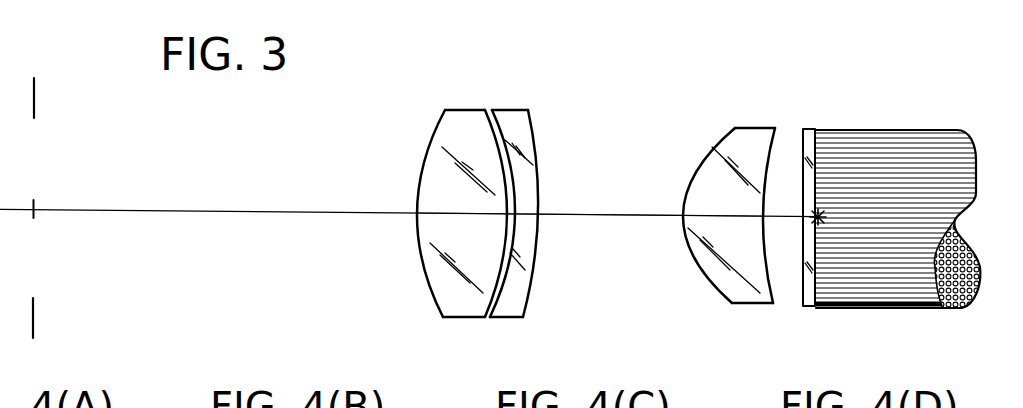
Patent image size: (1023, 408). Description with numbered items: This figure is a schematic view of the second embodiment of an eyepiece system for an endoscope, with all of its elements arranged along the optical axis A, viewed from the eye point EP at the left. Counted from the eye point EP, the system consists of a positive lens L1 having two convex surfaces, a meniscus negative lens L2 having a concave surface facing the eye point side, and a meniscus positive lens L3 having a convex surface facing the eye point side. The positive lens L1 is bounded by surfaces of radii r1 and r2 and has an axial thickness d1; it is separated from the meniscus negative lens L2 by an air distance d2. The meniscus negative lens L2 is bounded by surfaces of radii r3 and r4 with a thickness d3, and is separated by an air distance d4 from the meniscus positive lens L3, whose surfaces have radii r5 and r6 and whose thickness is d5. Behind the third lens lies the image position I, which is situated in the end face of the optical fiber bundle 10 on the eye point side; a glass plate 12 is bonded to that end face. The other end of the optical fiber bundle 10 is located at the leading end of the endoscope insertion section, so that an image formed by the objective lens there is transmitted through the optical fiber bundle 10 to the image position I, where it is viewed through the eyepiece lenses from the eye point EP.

The optical axis A is at (227, 211).
The eye point EP is at (37, 208).
The positive lens L1 is at (439, 191).
The meniscus negative lens L2 is at (548, 193).
The meniscus positive lens L3 is at (748, 203).
The radius of curvature of the first surface r1 is at (430, 287).
The radius of curvature of the second surface r2 is at (467, 302).
The radius of curvature of the third surface r3 is at (503, 293).
The radius of curvature of the fourth surface r4 is at (535, 285).
The radius of curvature of the fifth surface r5 is at (713, 295).
The radius of curvature of the sixth surface r6 is at (773, 297).
The distance between the first and second surfaces d1 is at (443, 215).
The air distance between the second and third surfaces d2 is at (510, 207).
The distance between the third and fourth surfaces d3 is at (525, 217).
The air distance between the fourth and fifth surfaces d4 is at (637, 217).
The distance between the fifth and sixth surfaces d5 is at (750, 218).
The glass plate 12 is at (808, 130).
The optical fiber bundle 10 is at (928, 130).
The image position I is at (819, 215).